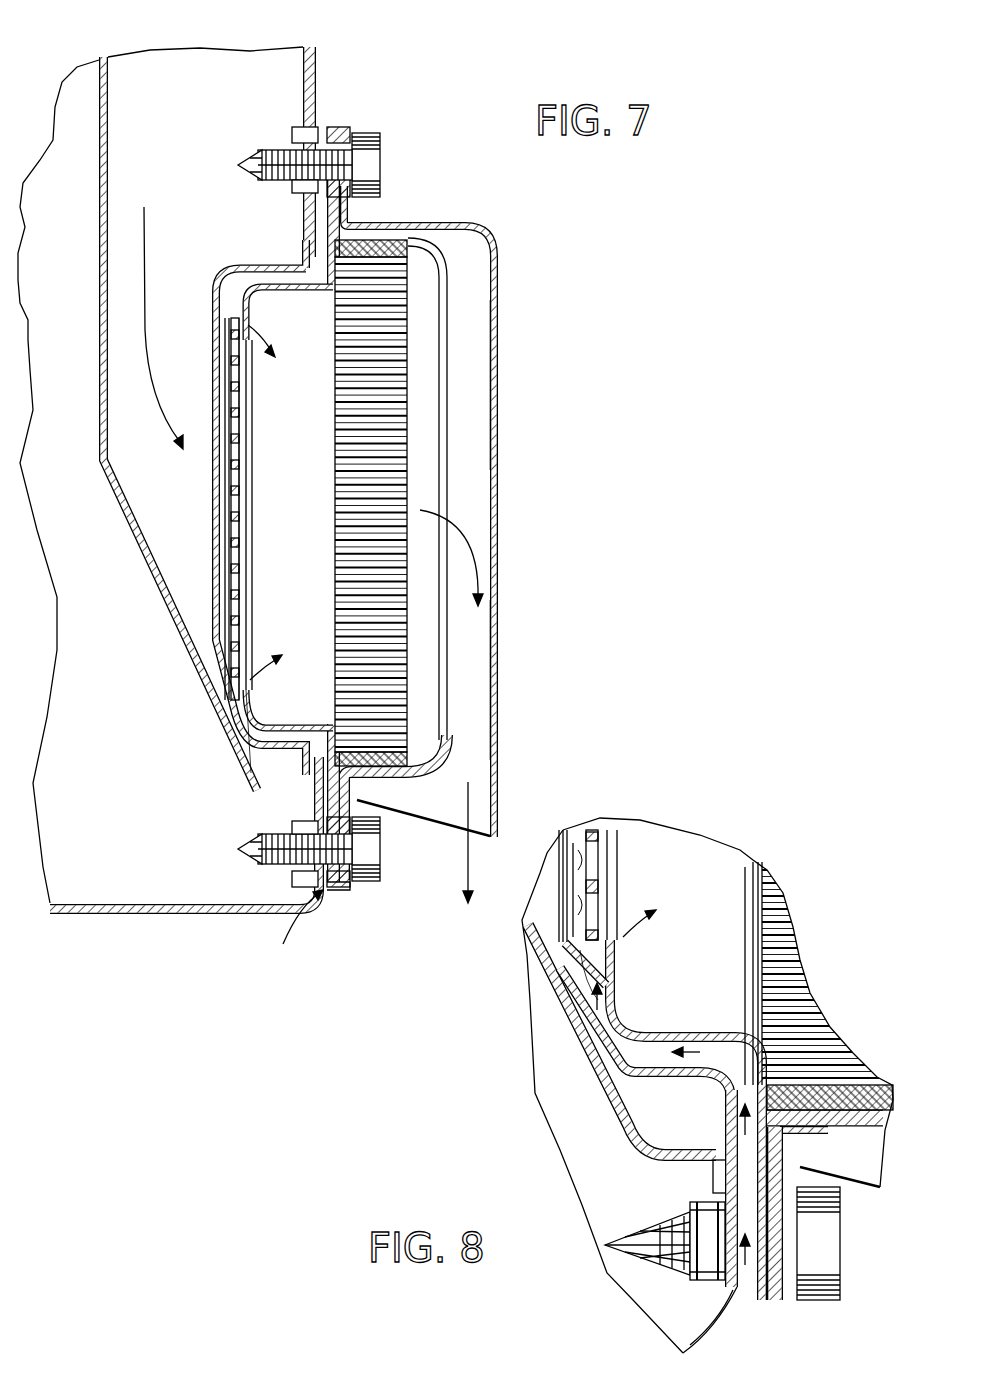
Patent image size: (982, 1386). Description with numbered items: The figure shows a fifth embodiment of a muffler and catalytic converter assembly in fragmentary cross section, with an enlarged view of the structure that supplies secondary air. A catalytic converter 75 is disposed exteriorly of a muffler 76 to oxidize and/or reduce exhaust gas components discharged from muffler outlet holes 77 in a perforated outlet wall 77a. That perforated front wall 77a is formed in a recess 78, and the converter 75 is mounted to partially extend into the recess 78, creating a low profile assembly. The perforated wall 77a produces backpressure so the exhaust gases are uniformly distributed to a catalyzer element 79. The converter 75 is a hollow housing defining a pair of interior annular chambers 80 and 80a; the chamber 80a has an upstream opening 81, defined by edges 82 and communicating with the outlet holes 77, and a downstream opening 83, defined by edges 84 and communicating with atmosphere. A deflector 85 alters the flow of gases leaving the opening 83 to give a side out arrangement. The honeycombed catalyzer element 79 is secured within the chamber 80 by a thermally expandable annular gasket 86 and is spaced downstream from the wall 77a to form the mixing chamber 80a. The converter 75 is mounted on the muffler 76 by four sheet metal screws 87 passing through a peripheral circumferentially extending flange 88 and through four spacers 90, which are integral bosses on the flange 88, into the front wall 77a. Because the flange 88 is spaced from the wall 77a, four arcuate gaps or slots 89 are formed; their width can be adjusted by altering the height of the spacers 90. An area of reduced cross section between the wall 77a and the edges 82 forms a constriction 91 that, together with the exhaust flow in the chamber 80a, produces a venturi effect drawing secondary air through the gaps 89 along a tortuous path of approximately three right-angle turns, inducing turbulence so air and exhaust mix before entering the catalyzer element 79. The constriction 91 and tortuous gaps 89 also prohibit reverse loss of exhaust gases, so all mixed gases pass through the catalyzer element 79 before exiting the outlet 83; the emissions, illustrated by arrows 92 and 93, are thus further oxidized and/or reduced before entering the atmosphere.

In FIG. 7, the catalytic converter 75 is at (481, 212).
In FIG. 7, the muffler 76 is at (322, 58).
In FIG. 8, the muffler 76 is at (617, 1142).
In FIG. 7, the muffler outlet holes 77 is at (236, 498).
In FIG. 8, the muffler outlet holes 77 is at (600, 903).
In FIG. 7, the perforated outlet wall 77a is at (237, 580).
In FIG. 8, the perforated outlet wall 77a is at (582, 832).
In FIG. 7, the recess 78 is at (220, 272).
In FIG. 8, the recess 78 is at (618, 1062).
In FIG. 7, the catalyzer element 79 is at (390, 465).
In FIG. 8, the catalyzer element 79 is at (793, 992).
In FIG. 7, the interior annular chamber 80 is at (410, 240).
In FIG. 8, the interior annular chamber 80 is at (843, 1113).
In FIG. 7, the mixing chamber 80a is at (242, 740).
In FIG. 8, the mixing chamber 80a is at (662, 1068).
In FIG. 7, the upstream opening 81 is at (253, 472).
In FIG. 7, the edges of upstream opening 82 is at (248, 334).
In FIG. 8, the edges of upstream opening 82 is at (612, 957).
In FIG. 7, the downstream opening 83 is at (500, 390).
In FIG. 7, the edges of downstream opening 84 is at (447, 312).
In FIG. 7, the deflector 85 is at (500, 670).
In FIG. 8, the deflector 85 is at (863, 1188).
In FIG. 7, the thermally expandable annular gasket 86 is at (398, 782).
In FIG. 8, the thermally expandable annular gasket 86 is at (840, 1087).
In FIG. 7, the sheet metal screws 87 is at (378, 137).
In FIG. 8, the sheet metal screws 87 is at (833, 1300).
In FIG. 7, the peripheral circumferentially extending flange 88 is at (341, 112).
In FIG. 8, the peripheral circumferentially extending flange 88 is at (763, 1294).
In FIG. 7, the arcuate gaps or slots 89 is at (300, 262).
In FIG. 8, the arcuate gaps or slots 89 is at (745, 1042).
In FIG. 7, the spacers 90 is at (316, 124).
In FIG. 8, the spacers 90 is at (733, 1290).
In FIG. 7, the constriction 91 is at (218, 330).
In FIG. 8, the constriction 91 is at (585, 956).
In FIG. 7, the emission arrows 92 is at (478, 522).
In FIG. 7, the emission arrows 93 is at (470, 810).